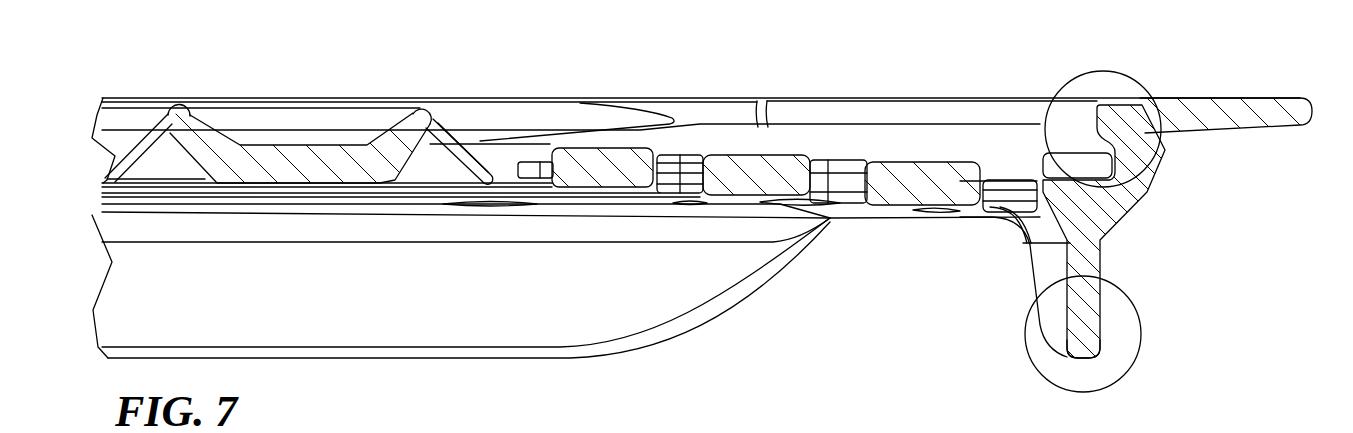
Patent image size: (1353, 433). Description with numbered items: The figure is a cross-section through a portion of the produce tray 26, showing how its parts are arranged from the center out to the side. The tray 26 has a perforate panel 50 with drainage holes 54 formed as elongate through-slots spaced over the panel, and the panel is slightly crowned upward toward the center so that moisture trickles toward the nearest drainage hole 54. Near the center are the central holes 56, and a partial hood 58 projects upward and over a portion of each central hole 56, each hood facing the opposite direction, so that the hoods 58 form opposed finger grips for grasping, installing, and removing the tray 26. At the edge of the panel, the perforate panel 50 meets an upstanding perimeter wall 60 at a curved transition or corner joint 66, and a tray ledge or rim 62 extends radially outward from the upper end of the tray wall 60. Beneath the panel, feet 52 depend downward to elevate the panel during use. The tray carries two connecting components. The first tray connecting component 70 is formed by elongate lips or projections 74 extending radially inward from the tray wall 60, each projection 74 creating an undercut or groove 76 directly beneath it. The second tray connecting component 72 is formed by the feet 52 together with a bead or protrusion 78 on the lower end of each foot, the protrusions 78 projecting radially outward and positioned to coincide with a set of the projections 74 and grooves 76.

The produce tray 26 is at (805, 72).
The perforate panel 50 is at (967, 127).
The feet 52 is at (600, 292).
The drainage holes 54 is at (690, 177).
The central holes 56 is at (497, 167).
The partial hood 58 is at (187, 130).
The perimeter wall 60 is at (1147, 157).
The tray ledge or rim 62 is at (1203, 113).
The curved transition or corner joint 66 is at (1107, 202).
The first tray connecting component 70 is at (1113, 72).
The second tray connecting component 72 is at (1143, 323).
The elongate lips or projections 74 is at (473, 120).
The undercut or groove 76 is at (1057, 177).
The bead or protrusion 78 is at (1110, 345).